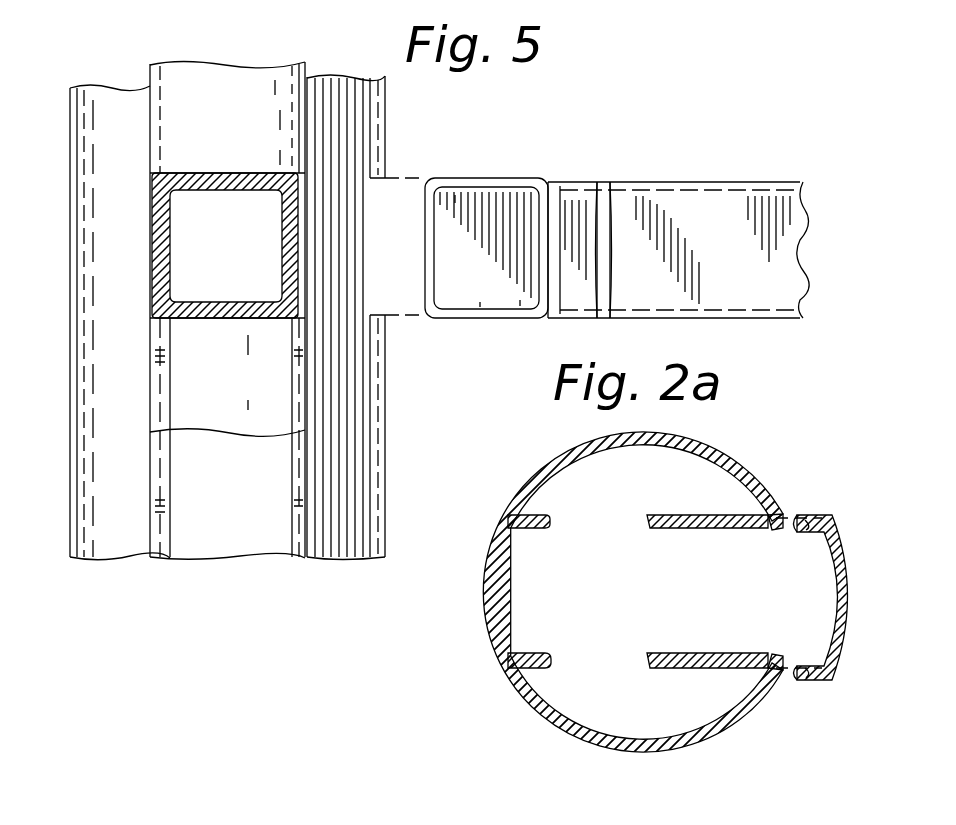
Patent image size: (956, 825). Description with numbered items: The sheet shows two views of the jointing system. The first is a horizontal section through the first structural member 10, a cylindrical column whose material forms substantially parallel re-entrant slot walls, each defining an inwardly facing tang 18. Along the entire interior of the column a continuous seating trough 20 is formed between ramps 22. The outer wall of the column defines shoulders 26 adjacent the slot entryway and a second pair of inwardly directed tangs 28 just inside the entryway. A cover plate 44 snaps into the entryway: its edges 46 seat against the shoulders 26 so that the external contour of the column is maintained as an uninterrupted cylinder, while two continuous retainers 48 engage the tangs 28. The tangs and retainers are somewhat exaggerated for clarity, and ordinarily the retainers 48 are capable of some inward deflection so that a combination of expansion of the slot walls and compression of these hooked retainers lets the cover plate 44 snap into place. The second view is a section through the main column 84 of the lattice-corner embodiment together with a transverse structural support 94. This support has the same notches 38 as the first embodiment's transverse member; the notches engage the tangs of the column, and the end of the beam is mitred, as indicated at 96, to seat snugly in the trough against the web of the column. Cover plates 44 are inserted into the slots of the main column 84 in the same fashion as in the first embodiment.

In FIG. 2A, the first structural member 10 is at (742, 460).
In FIG. 2A, the inwardly facing tang 18 is at (658, 530).
In FIG. 2A, the seating trough 20 is at (528, 578).
In FIG. 2A, the ramp 22 is at (540, 512).
In FIG. 2A, the shoulder 26 is at (774, 516).
In FIG. 2A, the inwardly directed tang 28 is at (752, 530).
In FIG. 5, the notch set 38 is at (610, 182).
In FIG. 5, the cover plate 44 is at (185, 82).
In FIG. 2A, the cover plate 44 is at (826, 579).
In FIG. 2A, the edge 46 is at (834, 518).
In FIG. 2A, the retainer 48 is at (800, 650).
In FIG. 5, the main column 84 is at (66, 142).
In FIG. 5, the transverse structural support 94 is at (800, 225).
In FIG. 5, the mitred end 96 is at (498, 182).